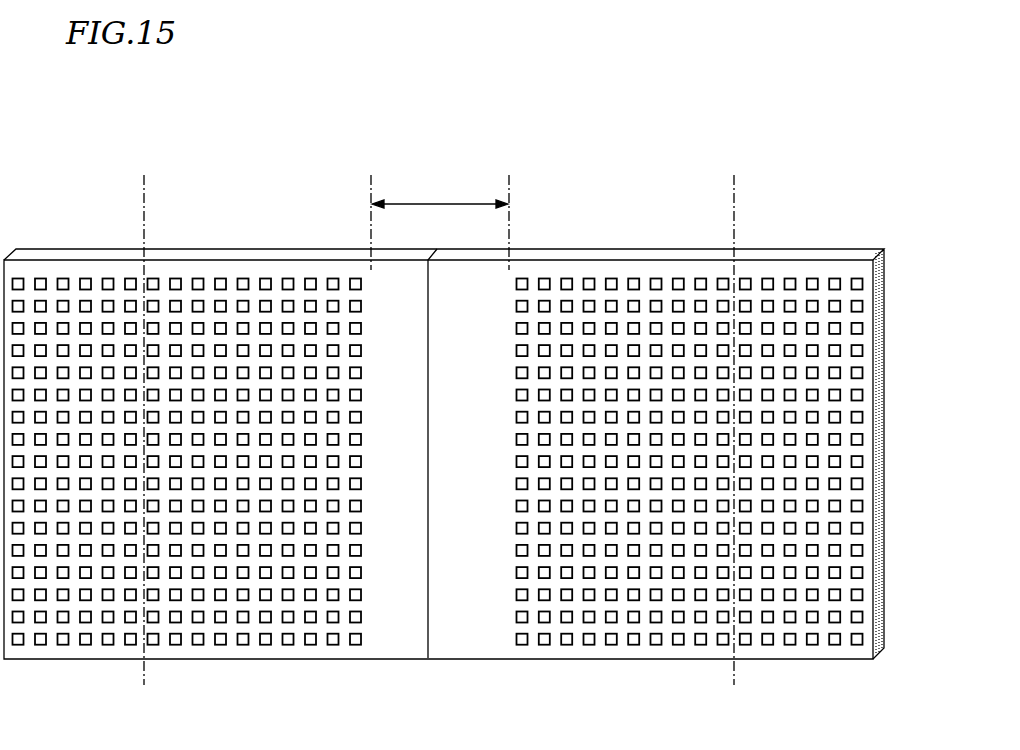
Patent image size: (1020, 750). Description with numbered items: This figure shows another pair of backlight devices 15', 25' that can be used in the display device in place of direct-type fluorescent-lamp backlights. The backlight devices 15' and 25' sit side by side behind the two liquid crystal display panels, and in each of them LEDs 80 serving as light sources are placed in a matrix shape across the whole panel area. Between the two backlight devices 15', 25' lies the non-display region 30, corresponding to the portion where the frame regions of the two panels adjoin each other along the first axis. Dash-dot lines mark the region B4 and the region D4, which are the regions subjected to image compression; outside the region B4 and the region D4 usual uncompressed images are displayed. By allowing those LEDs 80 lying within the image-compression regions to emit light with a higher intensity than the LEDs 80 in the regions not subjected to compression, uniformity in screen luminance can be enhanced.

The backlight device 25' is at (187, 417).
The backlight device 15' is at (700, 418).
The LED 80 is at (520, 643).
The non-display region 30 is at (440, 222).
The region B4 is at (145, 170).
The region D4 is at (735, 172).